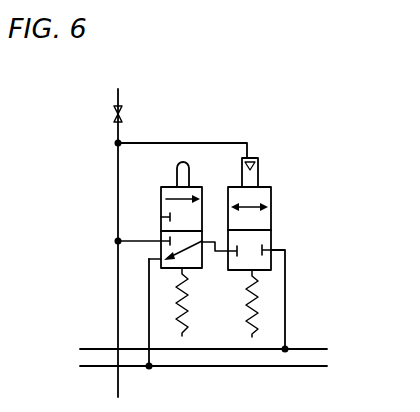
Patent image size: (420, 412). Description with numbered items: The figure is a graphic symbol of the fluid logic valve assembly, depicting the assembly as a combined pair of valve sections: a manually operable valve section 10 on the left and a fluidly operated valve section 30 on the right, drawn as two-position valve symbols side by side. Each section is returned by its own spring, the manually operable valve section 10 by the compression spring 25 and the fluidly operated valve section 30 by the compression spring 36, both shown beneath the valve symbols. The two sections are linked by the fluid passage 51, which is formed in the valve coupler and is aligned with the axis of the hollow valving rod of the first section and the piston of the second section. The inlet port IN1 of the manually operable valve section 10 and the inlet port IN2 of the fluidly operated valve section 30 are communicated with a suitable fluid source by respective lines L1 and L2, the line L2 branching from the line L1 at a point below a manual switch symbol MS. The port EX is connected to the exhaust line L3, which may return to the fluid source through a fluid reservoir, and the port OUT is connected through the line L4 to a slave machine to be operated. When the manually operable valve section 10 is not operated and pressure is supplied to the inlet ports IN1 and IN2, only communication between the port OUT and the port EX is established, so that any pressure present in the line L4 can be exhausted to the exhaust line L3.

The manually operable valve section 10 is at (173, 161).
The fluidly operated valve section 30 is at (258, 152).
The compression spring 25 is at (182, 336).
The compression spring 36 is at (253, 337).
The fluid passage 51 is at (216, 260).
The manual switch valve MS is at (95, 109).
The line L1 is at (119, 203).
The line L2 is at (152, 143).
The exhaust line L3 is at (310, 366).
The output line L4 is at (301, 330).
The inlet port IN1 is at (150, 237).
The inlet port IN2 is at (283, 155).
The port OUT is at (295, 287).
The port EX is at (137, 308).